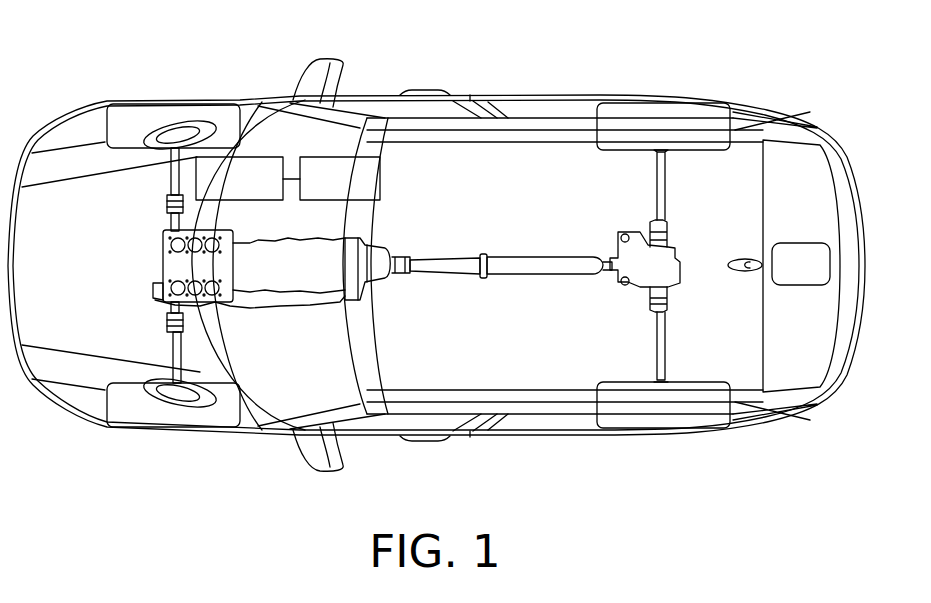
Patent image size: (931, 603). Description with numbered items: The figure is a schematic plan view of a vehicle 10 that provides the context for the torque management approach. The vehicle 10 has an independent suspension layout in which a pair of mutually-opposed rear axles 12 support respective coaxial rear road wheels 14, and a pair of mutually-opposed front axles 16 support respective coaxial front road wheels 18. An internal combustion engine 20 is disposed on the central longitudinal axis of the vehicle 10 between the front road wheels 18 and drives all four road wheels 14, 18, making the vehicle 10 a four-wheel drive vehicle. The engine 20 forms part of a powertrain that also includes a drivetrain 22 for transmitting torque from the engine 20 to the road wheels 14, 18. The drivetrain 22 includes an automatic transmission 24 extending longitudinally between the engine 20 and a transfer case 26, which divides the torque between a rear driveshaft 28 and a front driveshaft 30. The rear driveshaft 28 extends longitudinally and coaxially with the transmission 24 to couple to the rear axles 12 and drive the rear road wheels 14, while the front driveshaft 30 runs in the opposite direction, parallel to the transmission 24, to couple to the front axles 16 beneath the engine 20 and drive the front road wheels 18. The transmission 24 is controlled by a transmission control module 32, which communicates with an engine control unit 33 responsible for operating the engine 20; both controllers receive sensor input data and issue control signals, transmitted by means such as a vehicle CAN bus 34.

The vehicle 10 is at (187, 472).
The rear axles 12 is at (668, 184).
The rear road wheels 14 is at (735, 112).
The front axles 16 is at (172, 182).
The front road wheels 18 is at (105, 103).
The internal combustion engine 20 is at (167, 271).
The drivetrain 22 is at (345, 233).
The automatic transmission 24 is at (255, 284).
The transfer case 26 is at (380, 278).
The rear driveshaft 28 is at (530, 275).
The front driveshaft 30 is at (303, 301).
The transmission control module (TCM) 32 is at (384, 176).
The engine control unit (ECU) 33 is at (231, 163).
The vehicle CAN bus 34 is at (197, 211).